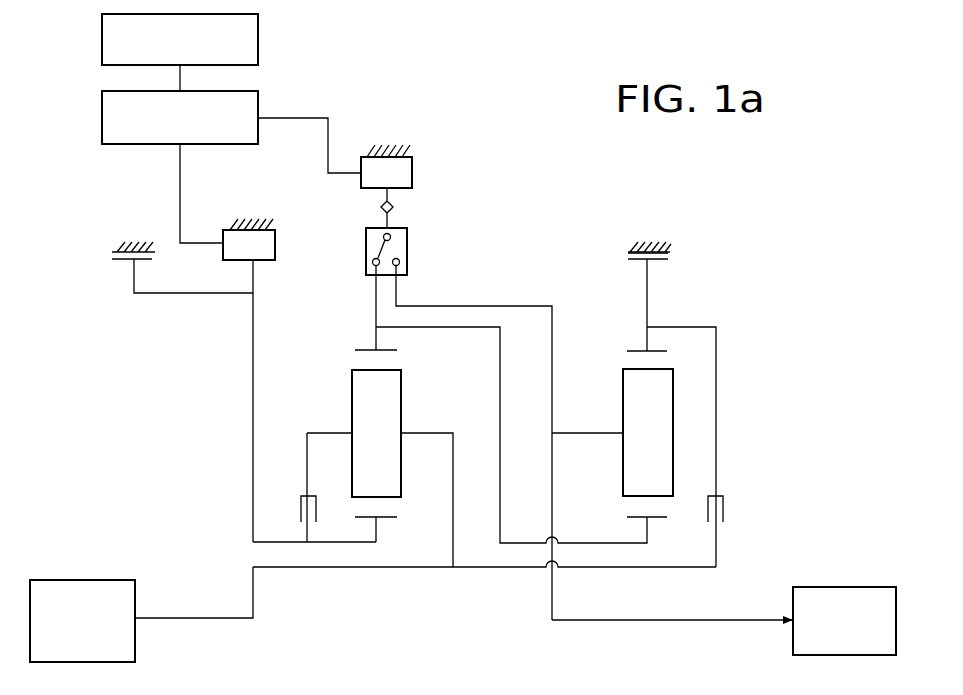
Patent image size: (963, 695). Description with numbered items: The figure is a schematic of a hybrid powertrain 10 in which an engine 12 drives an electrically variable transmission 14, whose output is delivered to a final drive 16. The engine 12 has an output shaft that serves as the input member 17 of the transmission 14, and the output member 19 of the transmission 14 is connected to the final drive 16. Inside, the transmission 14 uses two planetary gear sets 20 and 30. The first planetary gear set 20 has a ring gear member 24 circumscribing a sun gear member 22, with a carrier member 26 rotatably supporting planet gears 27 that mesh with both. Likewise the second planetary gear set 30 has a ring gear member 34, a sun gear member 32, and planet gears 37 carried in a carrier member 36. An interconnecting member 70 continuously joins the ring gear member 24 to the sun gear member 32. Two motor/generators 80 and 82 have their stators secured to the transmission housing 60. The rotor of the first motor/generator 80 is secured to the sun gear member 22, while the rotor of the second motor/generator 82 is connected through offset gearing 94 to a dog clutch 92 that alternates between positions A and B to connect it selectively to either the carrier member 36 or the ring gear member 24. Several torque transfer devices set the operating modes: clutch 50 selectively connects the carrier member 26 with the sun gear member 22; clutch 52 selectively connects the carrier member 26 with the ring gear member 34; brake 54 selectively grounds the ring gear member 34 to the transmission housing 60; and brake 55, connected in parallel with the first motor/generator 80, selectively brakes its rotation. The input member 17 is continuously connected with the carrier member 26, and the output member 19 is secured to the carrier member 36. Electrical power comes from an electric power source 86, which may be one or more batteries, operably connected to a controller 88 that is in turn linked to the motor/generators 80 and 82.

The powertrain 10 is at (130, 380).
The engine 12 is at (100, 562).
The electrically variable transmission 14 is at (500, 268).
The final drive 16 is at (828, 572).
The input member 17 is at (172, 620).
The output member 19 is at (752, 622).
The first planetary gear set 20 is at (367, 520).
The sun gear member 22 is at (386, 519).
The ring gear member 24 is at (362, 348).
The carrier member 26 is at (342, 424).
The planet gears 27 is at (366, 423).
The second planetary gear set 30 is at (637, 520).
The sun gear member 32 is at (658, 519).
The ring gear member 34 is at (639, 348).
The carrier member 36 is at (613, 440).
The planet gears 37 is at (637, 423).
The clutch 50 is at (292, 521).
The clutch 52 is at (736, 500).
The brake 54 is at (674, 252).
The brake 55 is at (108, 252).
The transmission housing 60 is at (118, 250).
The interconnecting member 70 is at (446, 328).
The first motor/generator 80 is at (220, 226).
The second motor/generator 82 is at (416, 153).
The electric power source 86 is at (102, 43).
The controller 88 is at (102, 118).
The dog clutch 92 is at (366, 256).
The offset gearing 94 is at (378, 206).